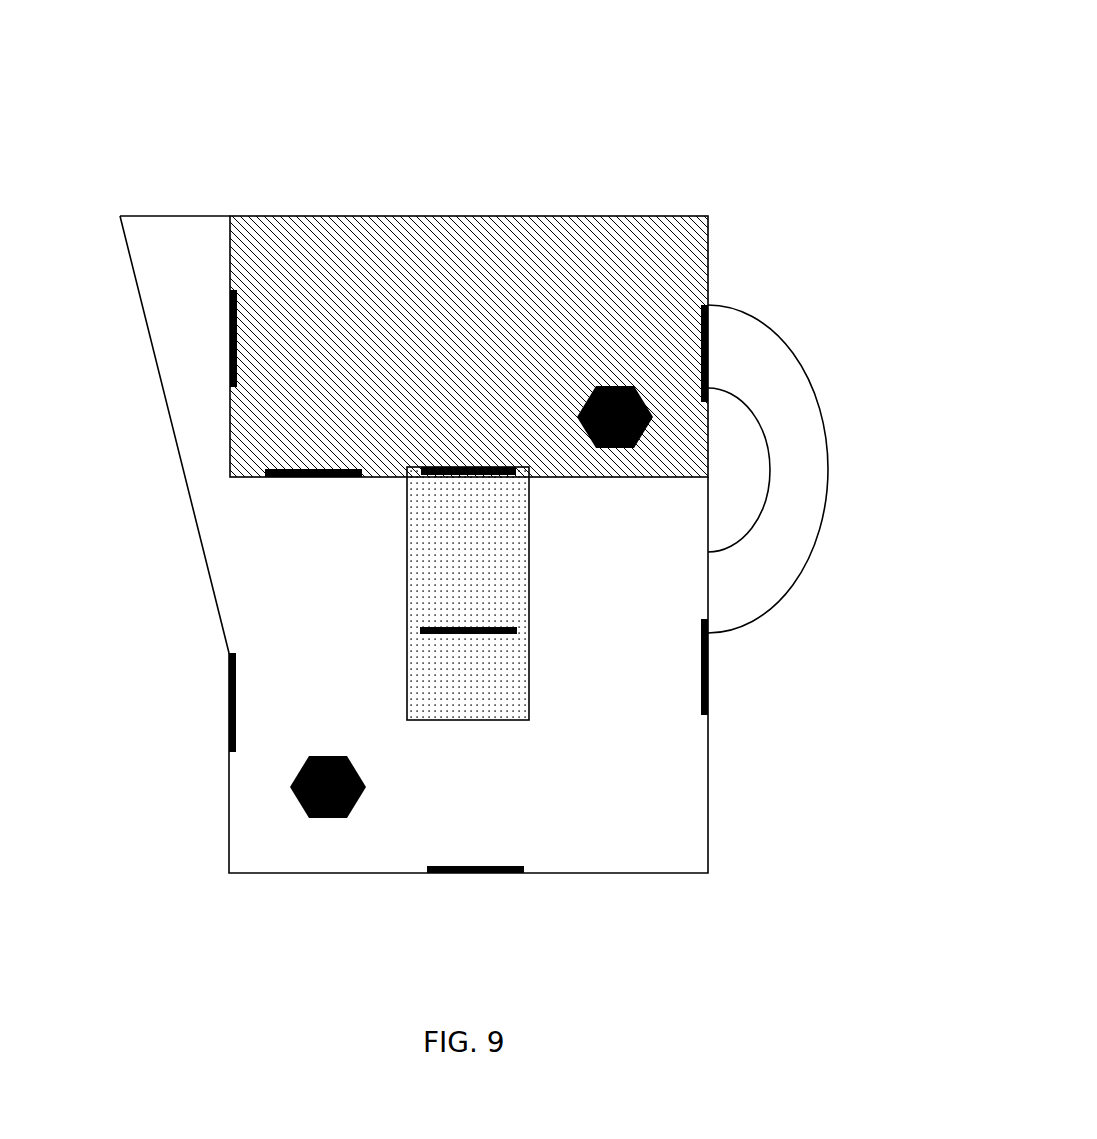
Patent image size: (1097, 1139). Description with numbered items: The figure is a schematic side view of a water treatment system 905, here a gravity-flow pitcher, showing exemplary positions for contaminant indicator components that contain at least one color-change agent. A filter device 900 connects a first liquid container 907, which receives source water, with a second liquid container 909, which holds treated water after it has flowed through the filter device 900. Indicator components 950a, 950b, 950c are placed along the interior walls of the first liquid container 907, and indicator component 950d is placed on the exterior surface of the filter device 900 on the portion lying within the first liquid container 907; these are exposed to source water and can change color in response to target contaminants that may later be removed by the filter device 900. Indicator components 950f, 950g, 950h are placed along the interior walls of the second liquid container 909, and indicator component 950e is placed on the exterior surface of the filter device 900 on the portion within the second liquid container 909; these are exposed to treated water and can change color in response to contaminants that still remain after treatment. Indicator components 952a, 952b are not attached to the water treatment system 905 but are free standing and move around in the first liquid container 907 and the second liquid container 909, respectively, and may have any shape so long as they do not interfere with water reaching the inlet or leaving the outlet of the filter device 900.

The water treatment system 905 is at (647, 168).
The first liquid container 907 is at (469, 346).
The second liquid container 909 is at (468, 675).
The filter device 900 is at (468, 593).
The indicator component 950a is at (303, 477).
The indicator component 950b is at (229, 336).
The indicator component 950c is at (708, 368).
The indicator component 950d is at (462, 467).
The indicator component 950e is at (483, 633).
The indicator component 950f is at (708, 658).
The indicator component 950g is at (495, 873).
The indicator component 950h is at (229, 708).
The indicator component 952a is at (645, 437).
The indicator component 952b is at (302, 810).